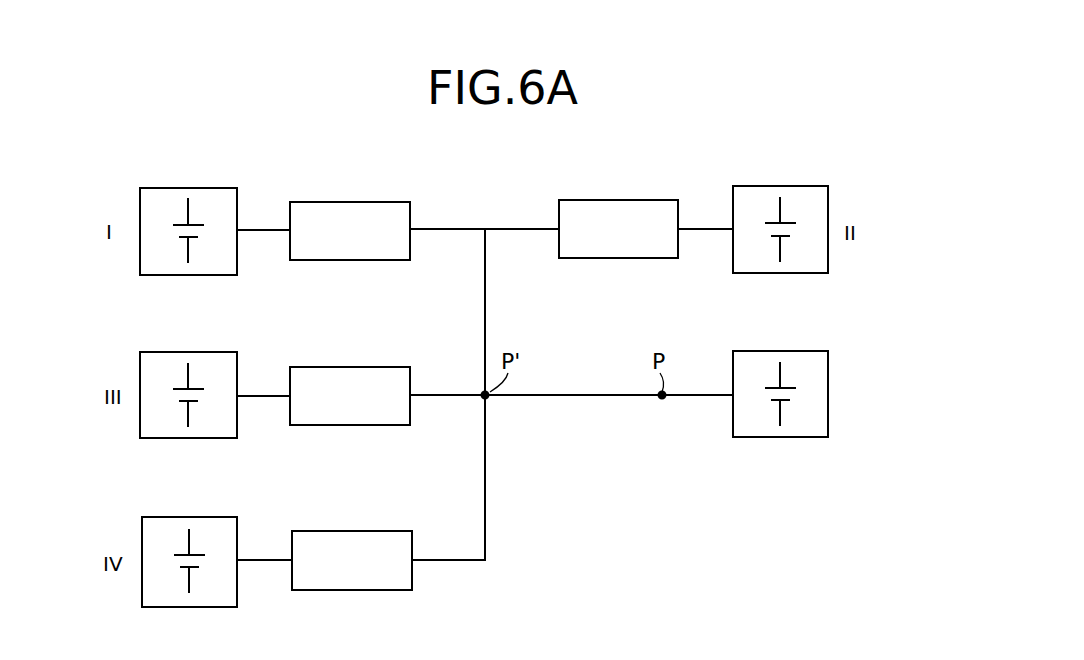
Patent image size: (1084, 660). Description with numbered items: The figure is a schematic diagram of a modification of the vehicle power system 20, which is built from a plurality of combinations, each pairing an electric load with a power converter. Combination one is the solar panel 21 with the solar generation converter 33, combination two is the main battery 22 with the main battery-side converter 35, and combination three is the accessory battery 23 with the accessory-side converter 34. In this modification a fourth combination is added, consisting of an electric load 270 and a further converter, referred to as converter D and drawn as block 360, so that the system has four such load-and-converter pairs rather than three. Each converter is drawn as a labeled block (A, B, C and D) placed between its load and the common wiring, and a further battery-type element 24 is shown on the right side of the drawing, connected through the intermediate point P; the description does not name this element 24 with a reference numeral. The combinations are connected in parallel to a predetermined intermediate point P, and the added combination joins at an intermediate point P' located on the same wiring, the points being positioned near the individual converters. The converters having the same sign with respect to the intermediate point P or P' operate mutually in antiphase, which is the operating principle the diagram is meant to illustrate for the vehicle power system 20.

The vehicle power system 20 is at (894, 141).
The solar panel 21 is at (218, 187).
The main battery 22 is at (810, 186).
The accessory battery 23 is at (219, 352).
The fourth battery 24 is at (814, 351).
The electric load 270 is at (221, 517).
The solar generation converter 33 is at (396, 261).
The accessory-side converter 34 is at (396, 426).
The main battery-side converter 35 is at (661, 259).
The switch D 360 is at (397, 591).